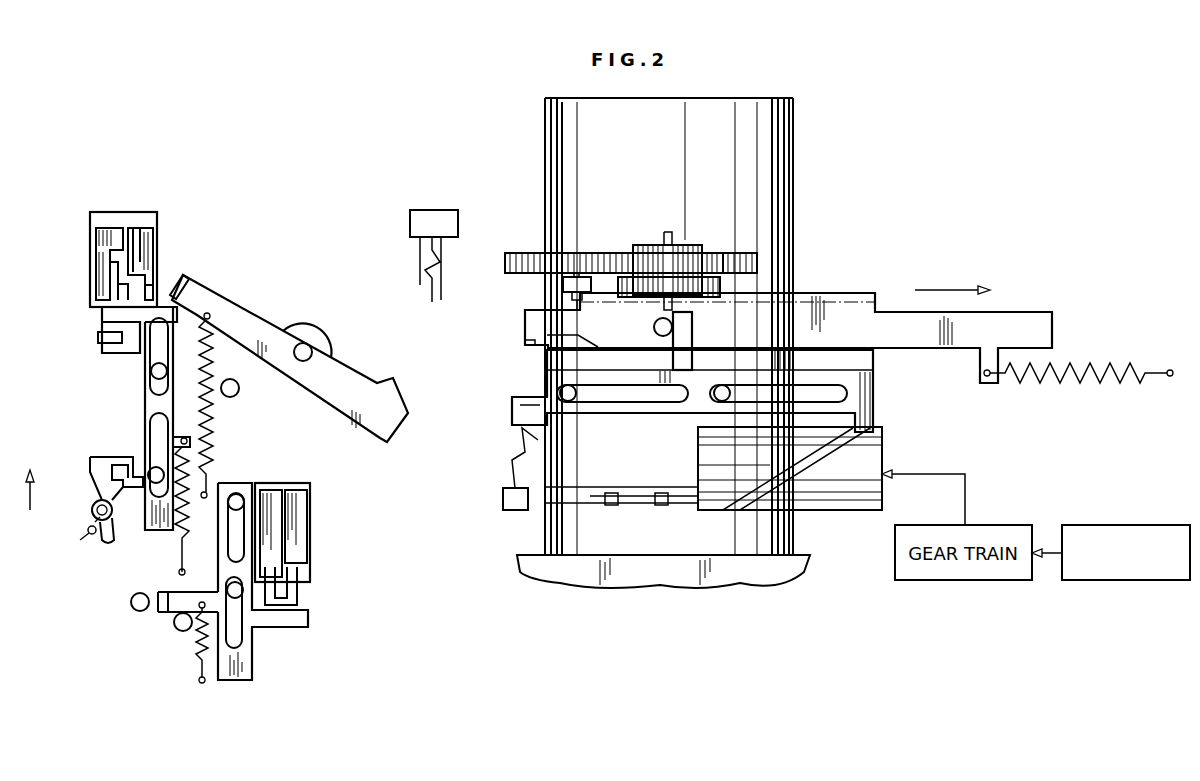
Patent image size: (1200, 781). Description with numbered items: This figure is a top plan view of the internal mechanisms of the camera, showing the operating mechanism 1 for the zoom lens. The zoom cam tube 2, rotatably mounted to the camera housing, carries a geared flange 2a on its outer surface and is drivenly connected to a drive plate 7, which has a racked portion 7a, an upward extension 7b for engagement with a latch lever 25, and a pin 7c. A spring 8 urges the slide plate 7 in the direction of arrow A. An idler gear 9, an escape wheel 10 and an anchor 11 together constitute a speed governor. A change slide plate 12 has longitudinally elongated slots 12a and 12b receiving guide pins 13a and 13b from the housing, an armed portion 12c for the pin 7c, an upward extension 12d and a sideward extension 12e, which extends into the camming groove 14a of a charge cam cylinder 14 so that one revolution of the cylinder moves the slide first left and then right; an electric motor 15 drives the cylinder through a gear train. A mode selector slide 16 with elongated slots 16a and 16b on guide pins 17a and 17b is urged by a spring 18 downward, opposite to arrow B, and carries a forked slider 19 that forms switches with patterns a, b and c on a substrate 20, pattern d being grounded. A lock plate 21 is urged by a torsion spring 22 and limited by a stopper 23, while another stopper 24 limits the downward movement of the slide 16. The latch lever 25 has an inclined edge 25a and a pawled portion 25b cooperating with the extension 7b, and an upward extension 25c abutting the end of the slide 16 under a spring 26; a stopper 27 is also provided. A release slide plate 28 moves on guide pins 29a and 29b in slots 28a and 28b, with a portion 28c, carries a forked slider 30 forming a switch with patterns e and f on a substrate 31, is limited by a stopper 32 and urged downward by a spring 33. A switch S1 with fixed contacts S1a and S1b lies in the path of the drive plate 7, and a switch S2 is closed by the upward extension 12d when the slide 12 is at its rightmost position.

The operating mechanism 1 is at (682, 342).
The cam tube 2 is at (545, 128).
The geared flange 2a is at (516, 252).
The drive plate 7 is at (852, 292).
The racked portion 7a is at (818, 294).
The upward extension 7b is at (526, 344).
The pin 7c is at (654, 328).
The spring 8 is at (1116, 364).
The idler gear 9 is at (712, 252).
The escape wheel 10 is at (654, 246).
The anchor 11 is at (571, 276).
The change slide plate 12 is at (874, 400).
The elongated slot 12a is at (847, 377).
The elongated slot 12b is at (620, 404).
The armed portion 12c is at (692, 326).
The upward extension 12d is at (514, 414).
The sideward extension 12e is at (874, 424).
The guide pin 13a is at (714, 402).
The guide pin 13b is at (568, 402).
The charge cam cylinder 14 is at (850, 514).
The camming groove 14a is at (804, 462).
The electric motor 15 is at (1170, 524).
The mode selector slide 16 is at (150, 520).
The elongated slot 16a is at (150, 386).
The elongated slot 16b is at (150, 422).
The guide pin 17a is at (151, 371).
The guide pin 17b is at (154, 468).
The spring 18 is at (180, 537).
The forked slider 19 is at (108, 298).
The substrate 20 is at (148, 212).
The lock plate 21 is at (96, 466).
The torsion spring 22 is at (92, 504).
The stopper 23 is at (92, 536).
The stopper 24 is at (130, 603).
The latch lever 25 is at (324, 400).
The inclined edge 25a is at (402, 392).
The pawled portion 25b is at (382, 390).
The upward extension 25c is at (188, 282).
The spring 26 is at (214, 414).
The stopper 27 is at (240, 389).
The release slide plate 28 is at (240, 682).
The elongated slot 28a is at (250, 492).
The elongated slot 28b is at (246, 644).
The arm 28c is at (162, 608).
The guide pin 29a is at (233, 494).
The guide pin 29b is at (244, 596).
The forked slider 30 is at (298, 598).
The substrate 31 is at (306, 484).
The stopper 32 is at (180, 630).
The spring 33 is at (198, 652).
The pattern a is at (148, 238).
The pattern b is at (150, 288).
The pattern c is at (122, 338).
The pattern d is at (97, 238).
The pattern e is at (300, 530).
The pattern f is at (272, 552).
The switch S1 is at (444, 212).
The fixed contact S1a is at (421, 288).
The fixed contact S1b is at (444, 290).
The switch S2 is at (504, 500).
The arrow A is at (962, 290).
The arrow B is at (29, 478).